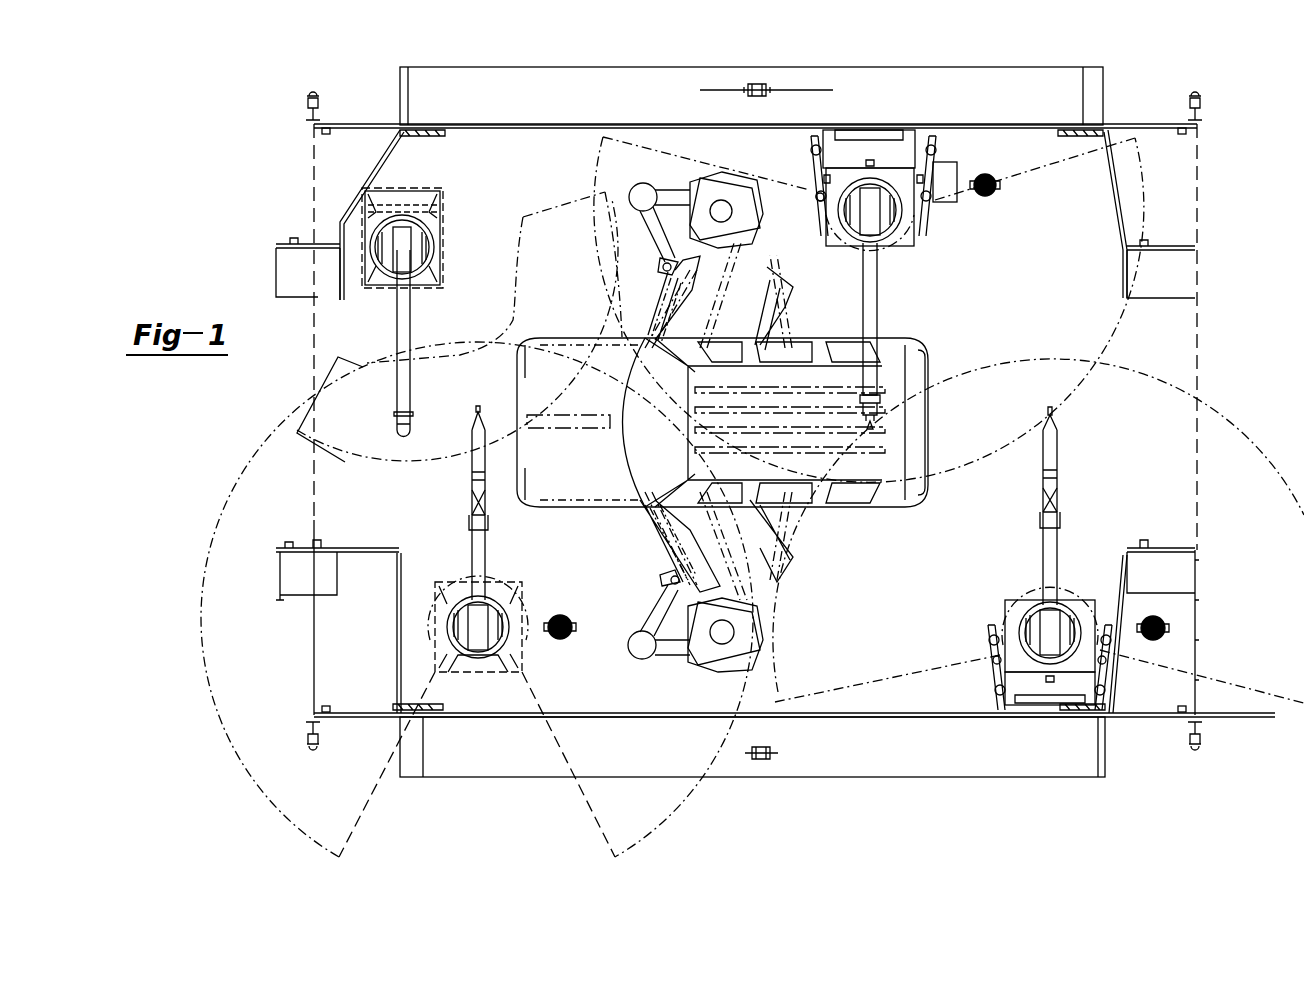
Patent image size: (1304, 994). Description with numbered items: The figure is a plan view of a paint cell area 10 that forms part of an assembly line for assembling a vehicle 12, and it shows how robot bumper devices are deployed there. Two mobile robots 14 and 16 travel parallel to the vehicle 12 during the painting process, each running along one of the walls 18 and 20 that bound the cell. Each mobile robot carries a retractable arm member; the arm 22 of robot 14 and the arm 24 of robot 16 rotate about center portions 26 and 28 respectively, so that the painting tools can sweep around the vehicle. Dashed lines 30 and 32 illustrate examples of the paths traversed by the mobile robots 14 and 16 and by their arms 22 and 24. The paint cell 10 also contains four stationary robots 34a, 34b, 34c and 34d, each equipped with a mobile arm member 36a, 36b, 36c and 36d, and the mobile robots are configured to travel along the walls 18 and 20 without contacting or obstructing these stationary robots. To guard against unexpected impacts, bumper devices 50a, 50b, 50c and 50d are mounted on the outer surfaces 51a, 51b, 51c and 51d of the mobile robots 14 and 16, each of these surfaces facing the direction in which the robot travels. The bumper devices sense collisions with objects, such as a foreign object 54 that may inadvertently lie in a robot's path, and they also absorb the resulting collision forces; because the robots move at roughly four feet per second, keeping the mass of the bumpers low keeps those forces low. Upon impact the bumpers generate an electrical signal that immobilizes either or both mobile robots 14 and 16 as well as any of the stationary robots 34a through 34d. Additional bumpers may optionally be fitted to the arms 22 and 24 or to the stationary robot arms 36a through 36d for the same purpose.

The paint cell area 10 is at (1222, 145).
The vehicle 12 is at (855, 470).
The mobile robot 14 is at (1046, 113).
The mobile robot 16 is at (1040, 698).
The wall 18 is at (470, 128).
The wall 20 is at (862, 717).
The retractable arm member 22 is at (880, 300).
The retractable arm member 24 is at (1060, 525).
The center portion 26 is at (900, 228).
The center portion 28 is at (1012, 622).
The dashed line 30 is at (1122, 320).
The dashed line 32 is at (1205, 400).
The stationary robot 34a is at (412, 190).
The stationary robot 34b is at (685, 165).
The stationary robot 34c is at (513, 648).
The stationary robot 34d is at (713, 665).
The mobile arm member 36a is at (412, 296).
The mobile arm member 36b is at (668, 236).
The mobile arm member 36c is at (482, 500).
The mobile arm member 36d is at (665, 622).
The bumper device 50a is at (808, 195).
The bumper device 50b is at (942, 150).
The bumper device 50c is at (987, 634).
The bumper device 50d is at (1106, 614).
The outer surface 51a is at (808, 185).
The outer surface 51b is at (928, 136).
The outer surface 51c is at (1000, 668).
The outer surface 51d is at (1115, 672).
The foreign object 54 is at (965, 185).